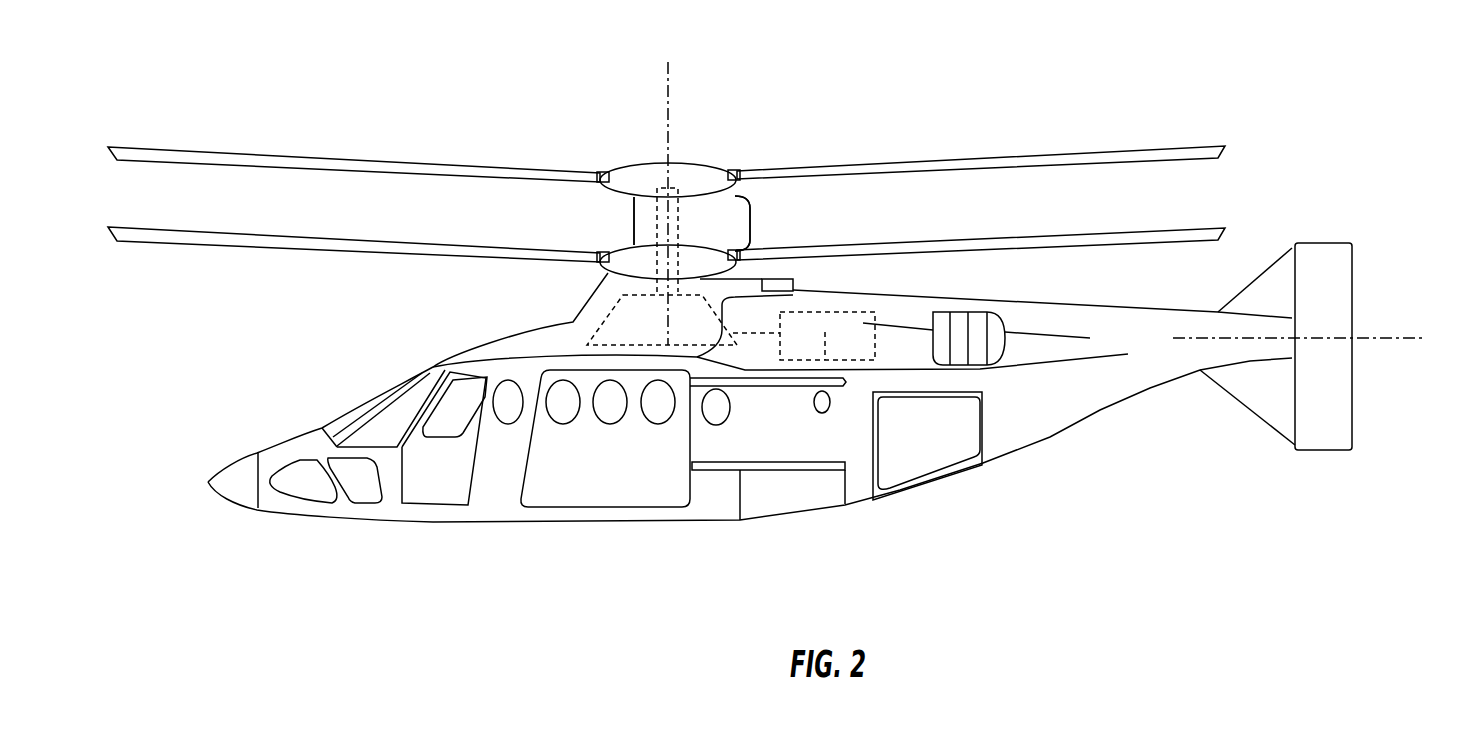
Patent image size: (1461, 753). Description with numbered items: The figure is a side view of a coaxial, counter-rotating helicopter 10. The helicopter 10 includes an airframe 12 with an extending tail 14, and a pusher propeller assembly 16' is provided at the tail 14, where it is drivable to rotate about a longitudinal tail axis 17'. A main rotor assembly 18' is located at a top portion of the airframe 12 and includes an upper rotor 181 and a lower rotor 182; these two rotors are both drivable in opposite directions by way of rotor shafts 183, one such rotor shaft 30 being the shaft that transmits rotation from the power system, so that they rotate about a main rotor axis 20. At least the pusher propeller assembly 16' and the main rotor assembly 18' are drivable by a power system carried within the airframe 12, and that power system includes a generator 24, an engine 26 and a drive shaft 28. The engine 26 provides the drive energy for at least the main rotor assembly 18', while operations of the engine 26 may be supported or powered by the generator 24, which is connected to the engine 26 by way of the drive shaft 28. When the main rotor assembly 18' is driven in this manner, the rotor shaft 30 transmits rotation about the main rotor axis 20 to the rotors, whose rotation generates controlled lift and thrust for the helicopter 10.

The helicopter 10 is at (393, 110).
The airframe 12 is at (608, 482).
The tail 14 is at (1152, 362).
The pusher propeller assembly 16' is at (1362, 366).
The longitudinal tail axis 17' is at (1315, 380).
The main rotor assembly 18' is at (666, 191).
The upper rotor 181 is at (623, 175).
The lower rotor 182 is at (623, 258).
The rotor shafts 183 is at (682, 237).
The rotor shaft 30 is at (682, 237).
The main rotor axis 20 is at (670, 87).
The generator 24 is at (826, 362).
The engine 26 is at (625, 322).
The drive shaft 28 is at (752, 336).